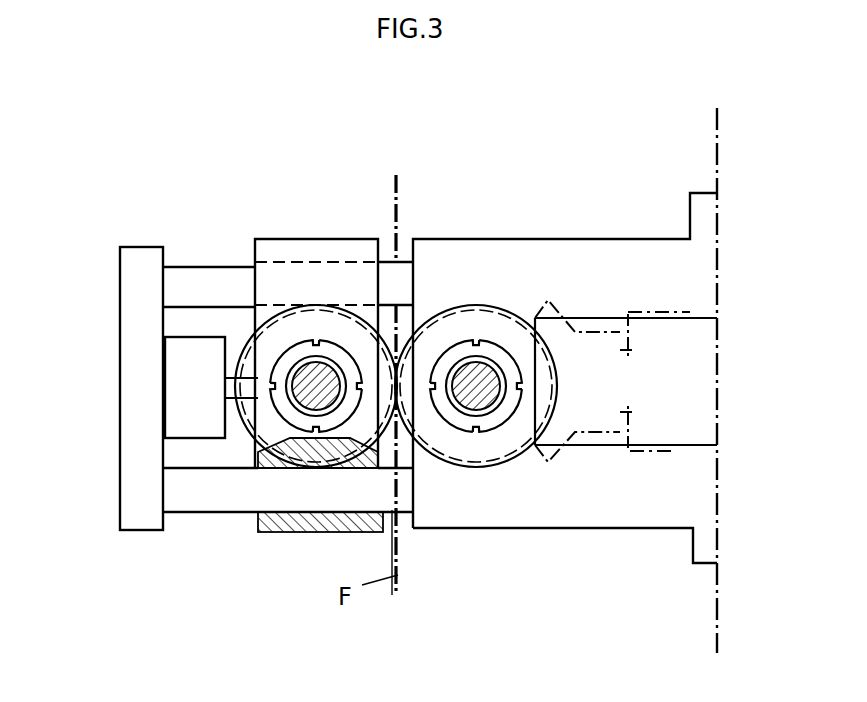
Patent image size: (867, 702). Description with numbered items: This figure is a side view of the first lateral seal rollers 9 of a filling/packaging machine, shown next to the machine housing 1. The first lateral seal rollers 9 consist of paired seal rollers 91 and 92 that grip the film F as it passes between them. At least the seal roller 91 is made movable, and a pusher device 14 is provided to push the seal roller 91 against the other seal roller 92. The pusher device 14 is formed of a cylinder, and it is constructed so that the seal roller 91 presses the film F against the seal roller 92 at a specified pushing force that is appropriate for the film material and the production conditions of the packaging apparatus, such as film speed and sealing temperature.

The machine housing 1 is at (718, 130).
The first lateral seal rollers 9 is at (413, 170).
The pusher device 14 is at (178, 381).
The seal roller 91 is at (323, 308).
The seal roller 92 is at (493, 307).